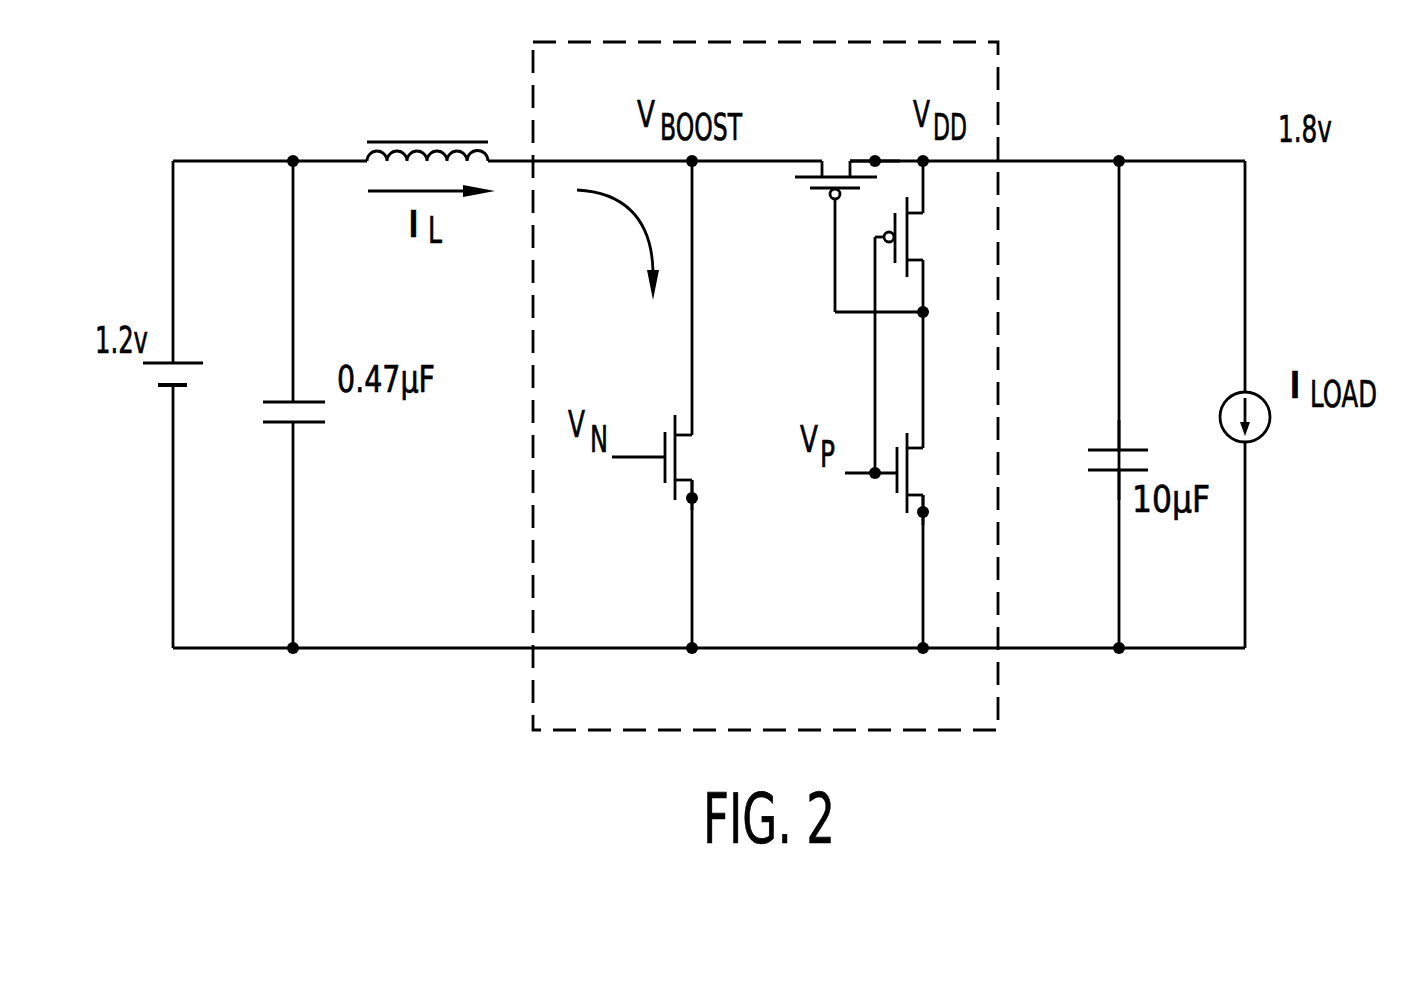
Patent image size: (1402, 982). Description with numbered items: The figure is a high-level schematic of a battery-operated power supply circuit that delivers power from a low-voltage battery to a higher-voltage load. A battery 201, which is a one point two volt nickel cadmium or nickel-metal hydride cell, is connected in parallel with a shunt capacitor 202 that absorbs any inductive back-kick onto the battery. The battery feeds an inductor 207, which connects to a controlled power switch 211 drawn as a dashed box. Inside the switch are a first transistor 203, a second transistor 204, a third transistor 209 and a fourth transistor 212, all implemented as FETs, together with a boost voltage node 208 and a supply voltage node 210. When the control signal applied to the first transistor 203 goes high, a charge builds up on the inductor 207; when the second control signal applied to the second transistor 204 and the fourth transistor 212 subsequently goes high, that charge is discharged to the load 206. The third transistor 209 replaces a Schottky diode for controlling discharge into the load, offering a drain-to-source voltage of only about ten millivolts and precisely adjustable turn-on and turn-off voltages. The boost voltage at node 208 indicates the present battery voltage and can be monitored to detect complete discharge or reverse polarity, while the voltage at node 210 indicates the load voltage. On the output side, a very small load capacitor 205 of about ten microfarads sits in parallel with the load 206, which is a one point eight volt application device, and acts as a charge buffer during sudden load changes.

The battery 201 is at (153, 404).
The shunt capacitor 202 is at (326, 404).
The first transistor 203 is at (655, 486).
The second transistor 204 is at (887, 501).
The load capacitor 205 is at (1099, 451).
The load 206 is at (1276, 438).
The inductor 207 is at (427, 127).
The V_BOOST node 208 is at (805, 236).
The third transistor 209 is at (856, 136).
The V_DD node 210 is at (929, 317).
The controlled power switch 211 is at (765, 365).
The fourth transistor 212 is at (909, 295).